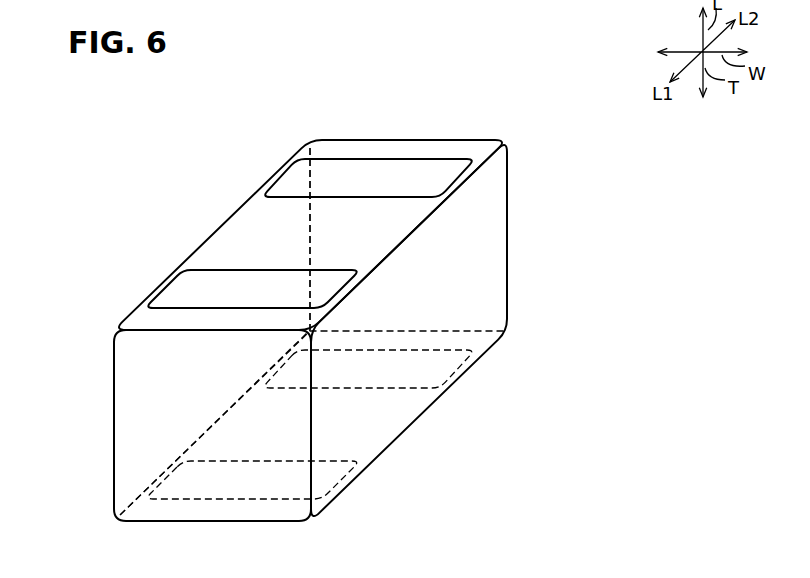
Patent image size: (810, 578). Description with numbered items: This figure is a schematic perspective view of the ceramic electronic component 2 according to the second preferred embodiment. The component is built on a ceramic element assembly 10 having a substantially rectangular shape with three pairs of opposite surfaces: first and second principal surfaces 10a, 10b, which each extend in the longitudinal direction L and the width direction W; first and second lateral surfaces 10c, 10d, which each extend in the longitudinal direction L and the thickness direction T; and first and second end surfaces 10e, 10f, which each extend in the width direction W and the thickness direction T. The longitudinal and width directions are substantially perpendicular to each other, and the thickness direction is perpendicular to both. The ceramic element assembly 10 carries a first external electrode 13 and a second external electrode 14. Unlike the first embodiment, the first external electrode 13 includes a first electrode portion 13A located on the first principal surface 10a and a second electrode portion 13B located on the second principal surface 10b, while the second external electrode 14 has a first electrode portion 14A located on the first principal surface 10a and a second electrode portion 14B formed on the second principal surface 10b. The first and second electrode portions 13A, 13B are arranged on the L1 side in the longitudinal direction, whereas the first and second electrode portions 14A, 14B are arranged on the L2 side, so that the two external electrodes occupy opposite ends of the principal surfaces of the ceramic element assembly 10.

The ceramic electronic component 2 is at (550, 118).
The ceramic element assembly 10 is at (516, 228).
The first principal surface 10a is at (238, 245).
The second principal surface 10b is at (367, 430).
The first lateral surface 10c is at (135, 387).
The second lateral surface 10d is at (467, 287).
The first end surface 10e is at (135, 455).
The second end surface 10f is at (483, 208).
The first external electrode 13 is at (357, 289).
The first electrode portion 13A is at (183, 293).
The second electrode portion 13B is at (350, 490).
The second external electrode 14 is at (460, 187).
The first electrode portion 14A is at (303, 168).
The second electrode portion 14B is at (457, 363).